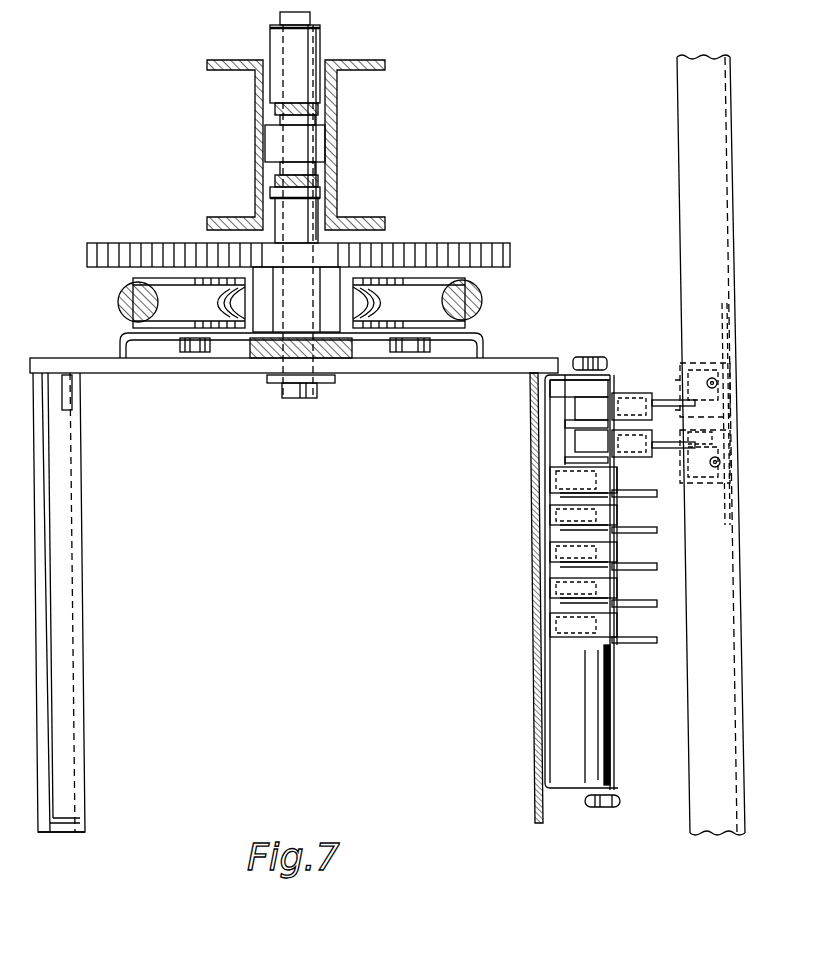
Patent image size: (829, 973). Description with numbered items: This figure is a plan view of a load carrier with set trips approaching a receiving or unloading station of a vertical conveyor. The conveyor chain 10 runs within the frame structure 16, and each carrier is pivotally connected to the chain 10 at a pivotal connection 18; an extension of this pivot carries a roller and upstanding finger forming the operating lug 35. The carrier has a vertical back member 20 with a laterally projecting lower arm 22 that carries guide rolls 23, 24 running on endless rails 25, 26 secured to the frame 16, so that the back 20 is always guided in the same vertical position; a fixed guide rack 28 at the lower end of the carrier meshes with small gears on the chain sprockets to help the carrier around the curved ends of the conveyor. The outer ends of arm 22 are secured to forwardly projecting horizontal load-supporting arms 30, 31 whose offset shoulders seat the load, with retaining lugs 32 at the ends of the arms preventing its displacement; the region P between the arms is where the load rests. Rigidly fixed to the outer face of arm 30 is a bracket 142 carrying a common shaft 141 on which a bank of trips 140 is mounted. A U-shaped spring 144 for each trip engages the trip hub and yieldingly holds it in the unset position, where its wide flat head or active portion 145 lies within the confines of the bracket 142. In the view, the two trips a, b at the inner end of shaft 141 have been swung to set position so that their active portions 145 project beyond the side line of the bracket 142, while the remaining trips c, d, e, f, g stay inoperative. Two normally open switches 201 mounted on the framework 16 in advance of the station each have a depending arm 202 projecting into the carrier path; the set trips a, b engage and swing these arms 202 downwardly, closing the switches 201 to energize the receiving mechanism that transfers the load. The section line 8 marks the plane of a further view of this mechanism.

The chain 10 is at (278, 136).
The operating lug 35 is at (320, 35).
The frame structure 16 is at (362, 60).
The guide rack 28 is at (505, 223).
The guide roll 24 is at (167, 293).
The endless rail 25 is at (122, 305).
The guide roll 23 is at (397, 295).
The endless rail 26 is at (482, 298).
The lower arm 22 is at (478, 365).
The vertical back member 20 is at (262, 358).
The pivotal connection 18 is at (306, 398).
The load-supporting arm 31 is at (70, 640).
The lug 32 is at (70, 830).
The load-supporting arm 30 is at (545, 625).
The common shaft 141 is at (612, 697).
The bracket 142 is at (572, 795).
The U-shaped spring 144 is at (555, 407).
The active portion 145 is at (625, 396).
The trip 140 is at (627, 492).
The operating switch 201 is at (718, 400).
The depending arm 202 is at (662, 405).
The section line 8 is at (495, 427).
The trip a is at (626, 408).
The trip b is at (626, 445).
The trip c is at (580, 481).
The trip d is at (586, 515).
The trip e is at (586, 552).
The trip f is at (585, 589).
The trip g is at (586, 626).
The panel P is at (282, 589).